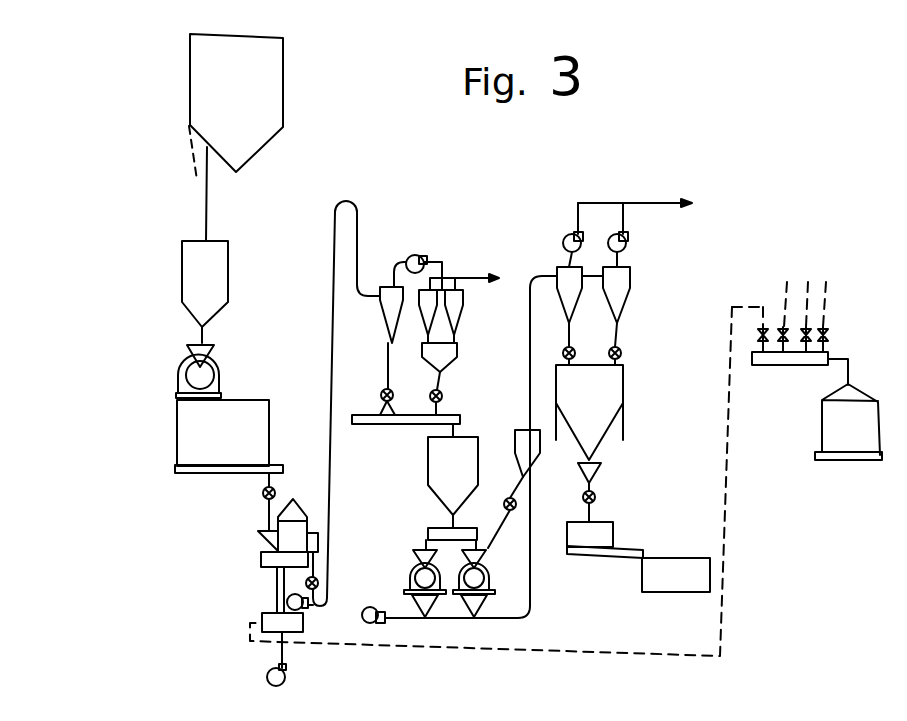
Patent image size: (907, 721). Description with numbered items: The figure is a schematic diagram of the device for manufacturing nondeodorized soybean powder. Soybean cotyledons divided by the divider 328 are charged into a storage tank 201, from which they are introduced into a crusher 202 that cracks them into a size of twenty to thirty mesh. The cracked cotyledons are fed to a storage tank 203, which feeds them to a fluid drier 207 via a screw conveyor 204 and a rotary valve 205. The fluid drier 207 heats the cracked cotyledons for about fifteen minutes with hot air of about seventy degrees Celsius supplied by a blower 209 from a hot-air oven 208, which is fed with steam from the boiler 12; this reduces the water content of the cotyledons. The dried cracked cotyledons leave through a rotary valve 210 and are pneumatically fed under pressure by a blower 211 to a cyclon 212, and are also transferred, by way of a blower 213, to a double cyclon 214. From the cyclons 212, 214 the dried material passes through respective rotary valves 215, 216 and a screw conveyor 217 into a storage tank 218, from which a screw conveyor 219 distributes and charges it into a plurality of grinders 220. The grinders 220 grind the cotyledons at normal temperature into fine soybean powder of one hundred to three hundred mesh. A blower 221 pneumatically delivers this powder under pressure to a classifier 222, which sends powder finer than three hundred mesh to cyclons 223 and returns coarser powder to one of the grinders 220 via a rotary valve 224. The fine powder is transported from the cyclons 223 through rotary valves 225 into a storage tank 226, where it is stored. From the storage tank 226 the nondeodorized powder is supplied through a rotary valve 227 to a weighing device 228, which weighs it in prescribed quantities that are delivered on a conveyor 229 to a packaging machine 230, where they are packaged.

The divider 328 is at (207, 83).
The storage tank 201 is at (187, 271).
The crusher 202 is at (178, 366).
The storage tank 203 is at (188, 433).
The screw conveyor 204 is at (178, 477).
The rotary valve 205 is at (262, 492).
The fluid drier 207 is at (294, 498).
The hot-air oven 208 is at (262, 615).
The blower 209 is at (290, 684).
The rotary valve 210 is at (318, 580).
The blower 211 is at (302, 610).
The cyclon 212 is at (386, 316).
The blower 213 is at (415, 255).
The double cyclon 214 is at (470, 302).
The rotary valve 215 is at (381, 392).
The rotary valve 216 is at (442, 396).
The screw conveyor 217 is at (370, 425).
The storage tank 218 is at (430, 473).
The screw conveyor 219 is at (428, 532).
The grinders 220 is at (481, 566).
The blower 221 is at (370, 623).
The classifier 222 is at (533, 460).
The cyclons 223 is at (560, 262).
The rotary valve 224 is at (508, 498).
The rotary valves 225 is at (564, 350).
The storage tank 226 is at (622, 390).
The rotary valve 227 is at (597, 495).
The weighing device 228 is at (610, 530).
The conveyor 229 is at (620, 556).
The packaging machine 230 is at (670, 582).
The boiler 12 is at (828, 425).